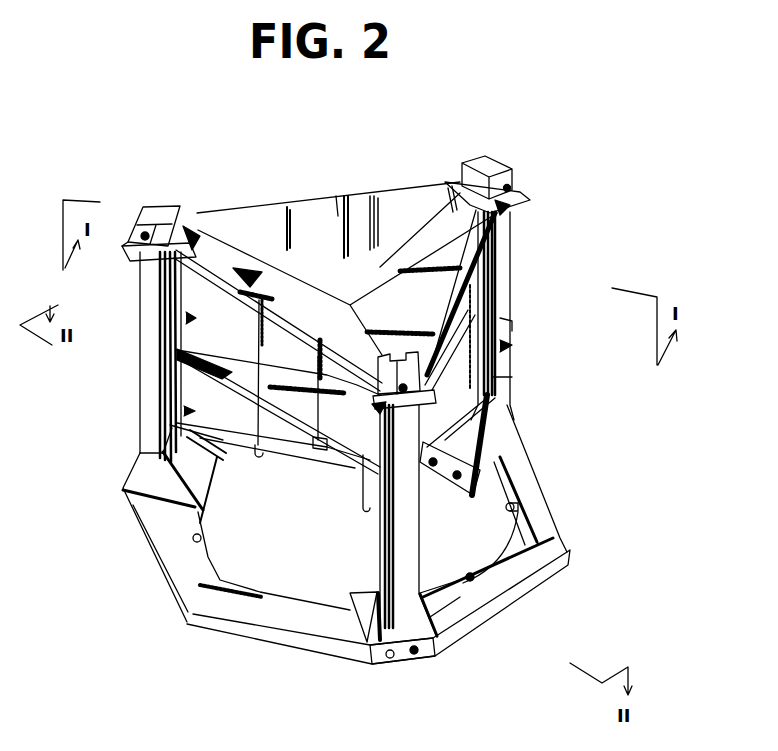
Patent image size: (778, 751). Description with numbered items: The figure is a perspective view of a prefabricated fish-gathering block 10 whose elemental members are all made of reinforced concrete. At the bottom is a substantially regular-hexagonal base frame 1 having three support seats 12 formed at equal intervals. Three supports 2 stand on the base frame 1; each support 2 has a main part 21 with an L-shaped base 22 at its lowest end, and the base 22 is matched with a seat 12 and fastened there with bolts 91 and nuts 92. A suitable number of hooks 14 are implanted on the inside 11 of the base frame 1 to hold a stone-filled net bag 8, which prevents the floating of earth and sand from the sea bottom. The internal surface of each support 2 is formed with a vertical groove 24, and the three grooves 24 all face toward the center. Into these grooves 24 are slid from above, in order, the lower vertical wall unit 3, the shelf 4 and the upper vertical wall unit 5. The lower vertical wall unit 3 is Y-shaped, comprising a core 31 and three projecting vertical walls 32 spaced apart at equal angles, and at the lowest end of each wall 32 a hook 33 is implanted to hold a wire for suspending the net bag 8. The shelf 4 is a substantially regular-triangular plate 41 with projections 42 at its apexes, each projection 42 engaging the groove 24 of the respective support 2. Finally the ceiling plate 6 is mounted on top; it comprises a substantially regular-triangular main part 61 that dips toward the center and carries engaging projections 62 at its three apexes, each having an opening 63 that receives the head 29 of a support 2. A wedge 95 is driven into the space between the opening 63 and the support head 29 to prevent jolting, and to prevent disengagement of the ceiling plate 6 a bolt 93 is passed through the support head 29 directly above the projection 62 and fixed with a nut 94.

The fish-gathering block 10 is at (421, 110).
The base frame 1 is at (562, 521).
The support 2 is at (143, 422).
The lower vertical wall unit 3 is at (142, 457).
The shelf 4 is at (190, 411).
The upper vertical wall unit 5 is at (192, 318).
The ceiling plate 6 is at (262, 218).
The stone-filled net bag 8 is at (547, 538).
The inside of the base frame 11 is at (202, 580).
The support seat 12 is at (382, 662).
The hook 14 is at (193, 543).
The main part of the support 21 is at (150, 346).
The L-shaped base 22 is at (142, 481).
The vertical groove 24 is at (177, 213).
The head of the support 29 is at (162, 203).
The core 31 is at (330, 471).
The projecting vertical wall 32 is at (287, 438).
The hook 33 is at (257, 459).
The regular-triangular plate 41 is at (265, 391).
The projection 42 is at (192, 368).
The main part of the ceiling plate 61 is at (338, 203).
The engaging projection 62 is at (148, 263).
The opening 63 is at (200, 236).
The bolt 91 is at (415, 656).
The nut 92 is at (203, 520).
The bolt 93 is at (364, 348).
The nut 94 is at (140, 245).
The wedge 95 is at (418, 482).